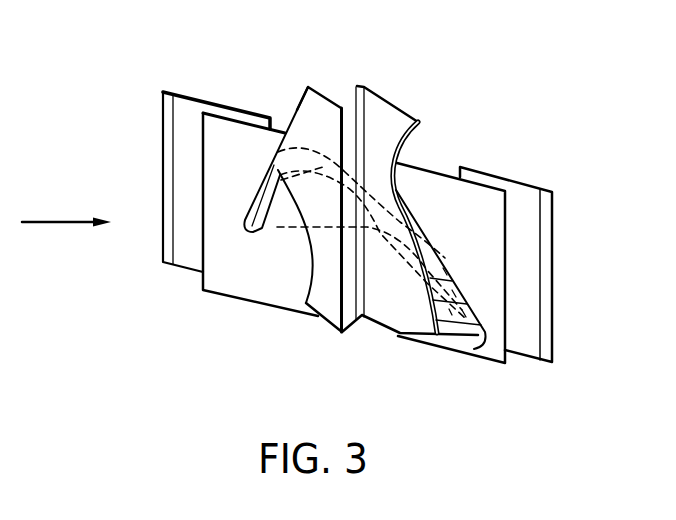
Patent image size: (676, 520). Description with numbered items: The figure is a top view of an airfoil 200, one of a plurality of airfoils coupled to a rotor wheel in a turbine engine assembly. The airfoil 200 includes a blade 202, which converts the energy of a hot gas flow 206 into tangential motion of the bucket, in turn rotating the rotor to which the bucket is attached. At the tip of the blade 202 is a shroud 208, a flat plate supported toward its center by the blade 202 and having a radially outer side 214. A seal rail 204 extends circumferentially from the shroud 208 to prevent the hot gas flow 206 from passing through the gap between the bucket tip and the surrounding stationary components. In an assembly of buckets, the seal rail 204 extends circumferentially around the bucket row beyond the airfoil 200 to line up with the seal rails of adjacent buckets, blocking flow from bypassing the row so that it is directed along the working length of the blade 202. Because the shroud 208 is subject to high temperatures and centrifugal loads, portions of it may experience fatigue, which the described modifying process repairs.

The airfoil 200 is at (158, 62).
The blade 202 is at (487, 310).
The seal rail 204 is at (352, 298).
The hot gas flow 206 is at (65, 224).
The shroud 208 is at (423, 115).
The radially outer side 214 is at (312, 103).